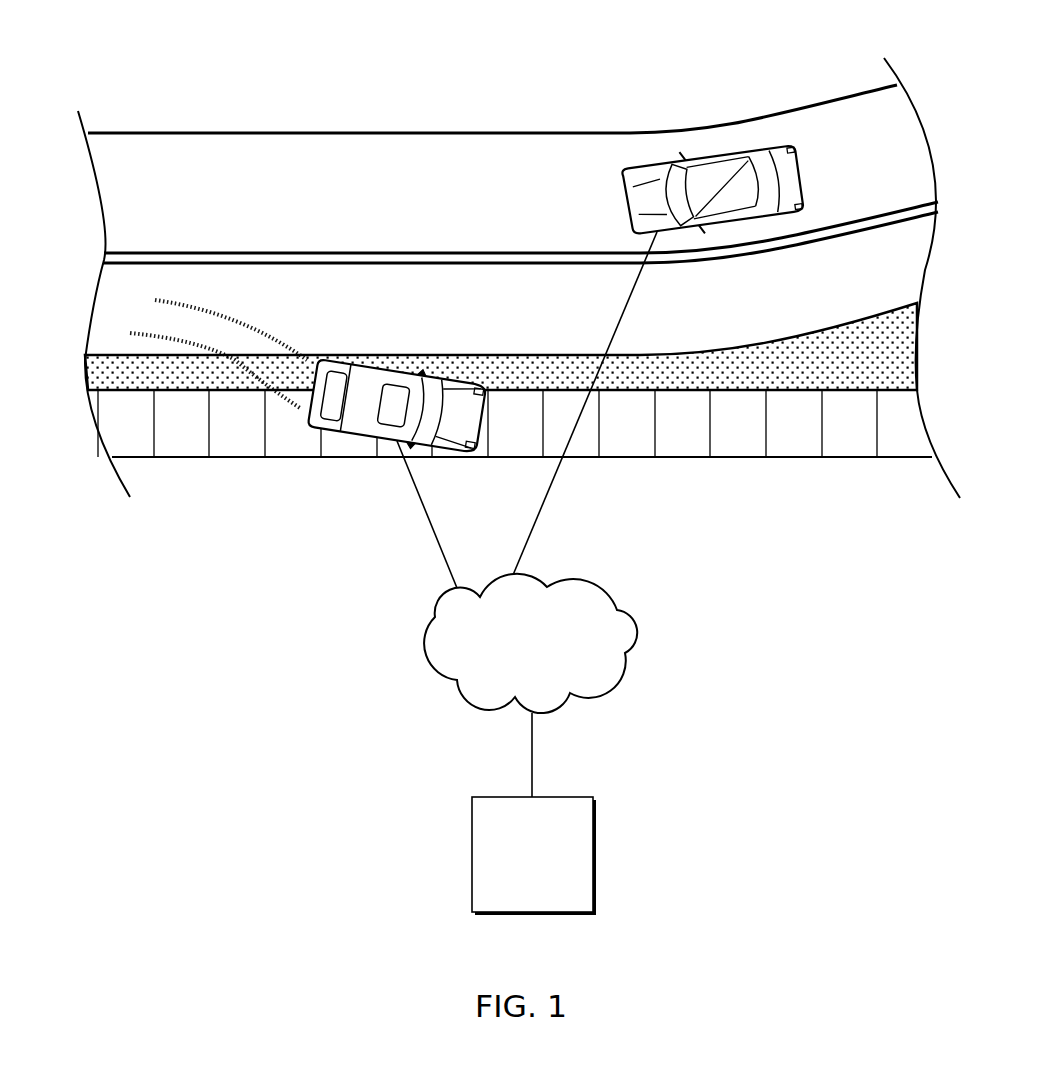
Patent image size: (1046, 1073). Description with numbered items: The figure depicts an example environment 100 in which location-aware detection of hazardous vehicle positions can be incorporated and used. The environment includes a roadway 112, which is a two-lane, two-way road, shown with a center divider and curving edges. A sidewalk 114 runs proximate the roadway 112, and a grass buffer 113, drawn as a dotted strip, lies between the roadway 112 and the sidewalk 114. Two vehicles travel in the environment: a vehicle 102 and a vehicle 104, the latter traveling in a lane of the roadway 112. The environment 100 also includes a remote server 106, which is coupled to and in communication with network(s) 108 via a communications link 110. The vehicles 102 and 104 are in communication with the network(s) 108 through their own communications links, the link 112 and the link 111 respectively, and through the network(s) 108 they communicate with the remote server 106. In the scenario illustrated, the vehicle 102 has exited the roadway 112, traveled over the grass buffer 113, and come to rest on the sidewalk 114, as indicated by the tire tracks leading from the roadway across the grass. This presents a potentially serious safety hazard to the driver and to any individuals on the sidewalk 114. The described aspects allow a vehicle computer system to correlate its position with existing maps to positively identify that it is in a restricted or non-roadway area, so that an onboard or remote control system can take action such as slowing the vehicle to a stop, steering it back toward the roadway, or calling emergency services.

The environment 100 is at (223, 82).
The vehicle 102 is at (348, 412).
The vehicle 104 is at (652, 170).
The remote server 106 is at (553, 895).
The network(s) 108 is at (554, 679).
The communications link 110 is at (534, 753).
The communications link 111 is at (544, 508).
The roadway 112 is at (188, 218).
The grass buffer 113 is at (92, 382).
The sidewalk 114 is at (141, 433).